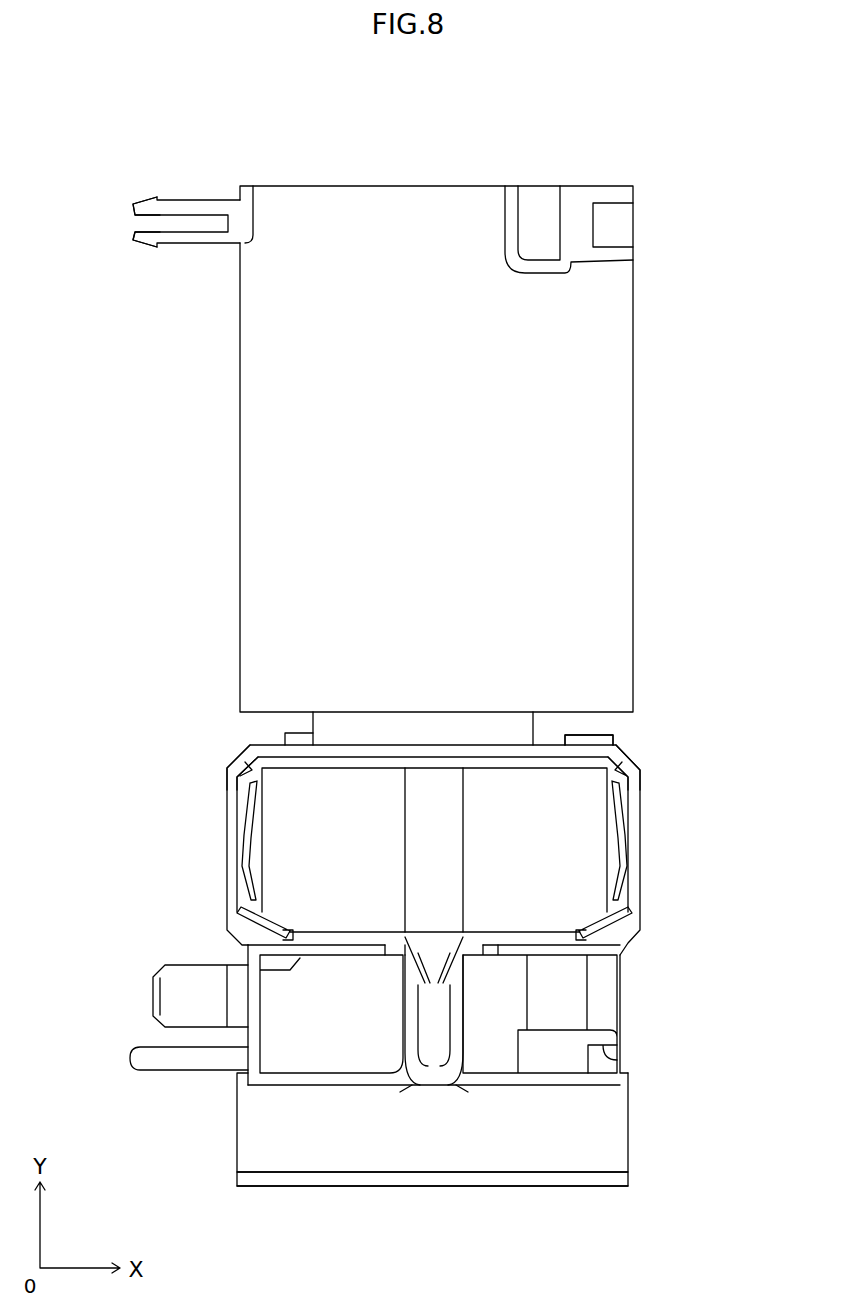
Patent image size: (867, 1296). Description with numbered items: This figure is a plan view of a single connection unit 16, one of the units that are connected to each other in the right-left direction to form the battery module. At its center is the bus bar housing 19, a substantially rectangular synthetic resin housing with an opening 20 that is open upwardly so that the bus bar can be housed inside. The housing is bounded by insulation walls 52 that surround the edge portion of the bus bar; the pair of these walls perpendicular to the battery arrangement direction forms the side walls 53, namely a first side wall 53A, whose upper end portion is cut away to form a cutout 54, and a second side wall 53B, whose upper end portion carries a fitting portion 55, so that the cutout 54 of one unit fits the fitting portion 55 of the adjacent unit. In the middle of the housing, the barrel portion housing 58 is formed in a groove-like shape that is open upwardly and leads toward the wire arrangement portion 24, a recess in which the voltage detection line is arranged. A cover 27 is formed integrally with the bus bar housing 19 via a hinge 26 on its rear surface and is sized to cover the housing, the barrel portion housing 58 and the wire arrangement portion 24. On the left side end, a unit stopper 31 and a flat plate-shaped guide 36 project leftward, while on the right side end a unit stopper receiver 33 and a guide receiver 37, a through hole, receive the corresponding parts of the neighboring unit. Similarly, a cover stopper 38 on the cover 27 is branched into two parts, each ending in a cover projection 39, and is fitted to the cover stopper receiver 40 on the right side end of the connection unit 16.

The connection unit 16 is at (441, 1178).
The bus bar housing 19 is at (553, 752).
The opening 20 is at (512, 766).
The wire arrangement portion 24 is at (500, 1165).
The hinge 26 is at (347, 722).
The cover 27 is at (383, 210).
The unit stopper 31 is at (170, 990).
The unit stopper receiver 33 is at (612, 990).
The guide 36 is at (155, 1063).
The guide receiver 37 is at (625, 1063).
The cover stopper 38 is at (193, 237).
The cover projection 39 is at (140, 197).
The cover stopper receiver 40 is at (578, 210).
The insulation wall 52 is at (585, 752).
The side walls 53 is at (425, 860).
The first side wall 53A is at (232, 805).
The second side wall 53B is at (620, 852).
The cutout 54 is at (240, 772).
The fitting portion 55 is at (632, 800).
The barrel portion housing 58 is at (407, 1012).